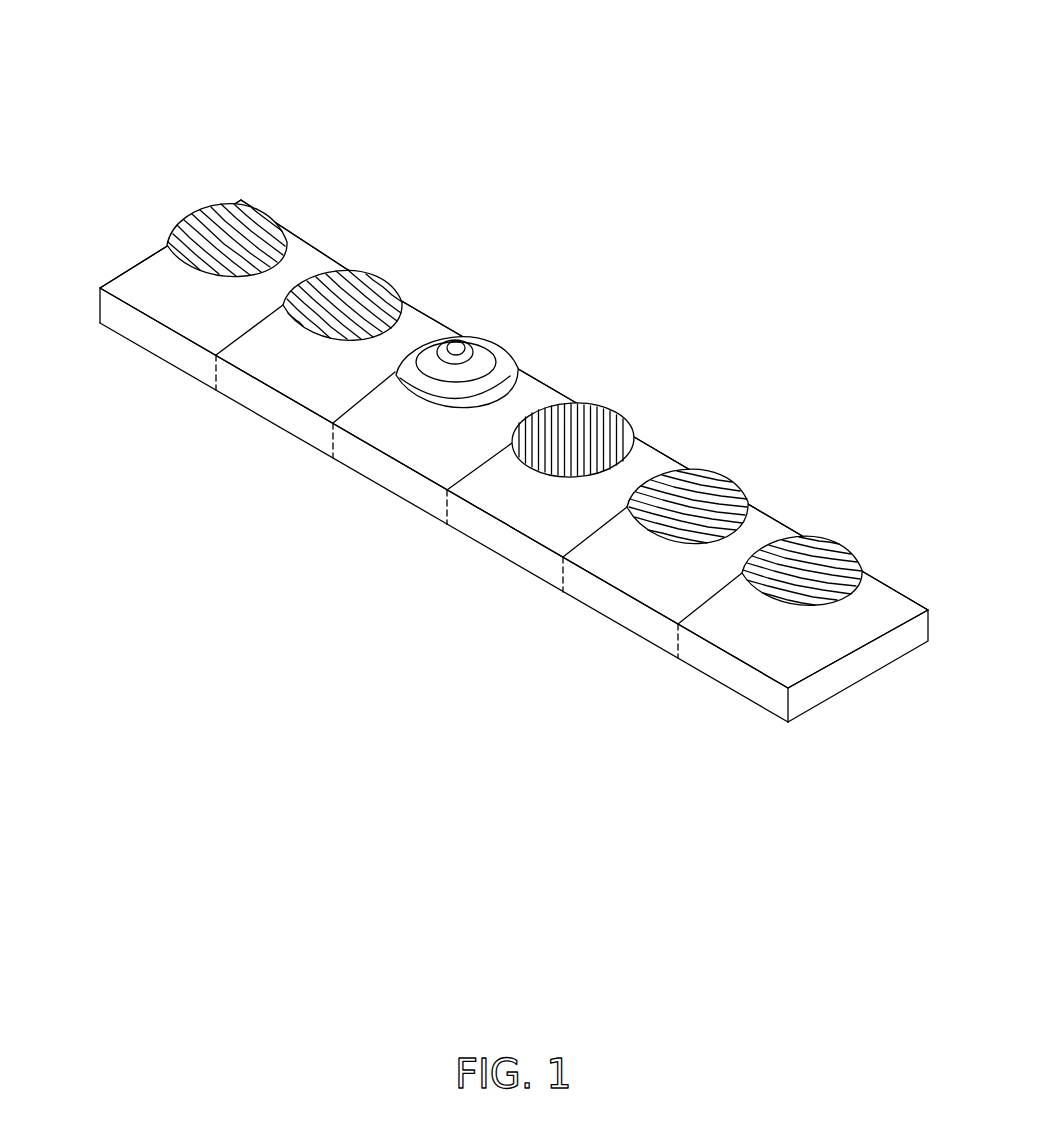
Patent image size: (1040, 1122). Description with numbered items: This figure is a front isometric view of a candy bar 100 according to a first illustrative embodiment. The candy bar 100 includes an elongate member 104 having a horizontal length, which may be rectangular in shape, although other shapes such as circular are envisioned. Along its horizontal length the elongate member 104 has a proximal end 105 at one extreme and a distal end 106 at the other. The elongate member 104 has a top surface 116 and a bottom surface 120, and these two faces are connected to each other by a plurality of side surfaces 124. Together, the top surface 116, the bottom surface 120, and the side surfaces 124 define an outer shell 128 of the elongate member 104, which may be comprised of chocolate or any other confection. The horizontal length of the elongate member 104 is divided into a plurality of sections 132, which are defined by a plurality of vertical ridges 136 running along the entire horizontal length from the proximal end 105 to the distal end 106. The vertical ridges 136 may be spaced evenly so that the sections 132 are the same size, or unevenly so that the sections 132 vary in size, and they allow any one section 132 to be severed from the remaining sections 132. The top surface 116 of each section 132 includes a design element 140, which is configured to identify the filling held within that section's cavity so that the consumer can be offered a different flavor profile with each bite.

The candy bar 100 is at (171, 64).
The elongate member 104 is at (315, 565).
The proximal end 105 is at (112, 251).
The distal end 106 is at (881, 708).
The top surface 116 is at (535, 391).
The bottom surface 120 is at (612, 619).
The side surfaces 124 is at (510, 543).
The outer shell 128 is at (786, 692).
The sections 132 is at (310, 243).
The vertical ridges 136 is at (236, 342).
The design element 140 is at (602, 426).